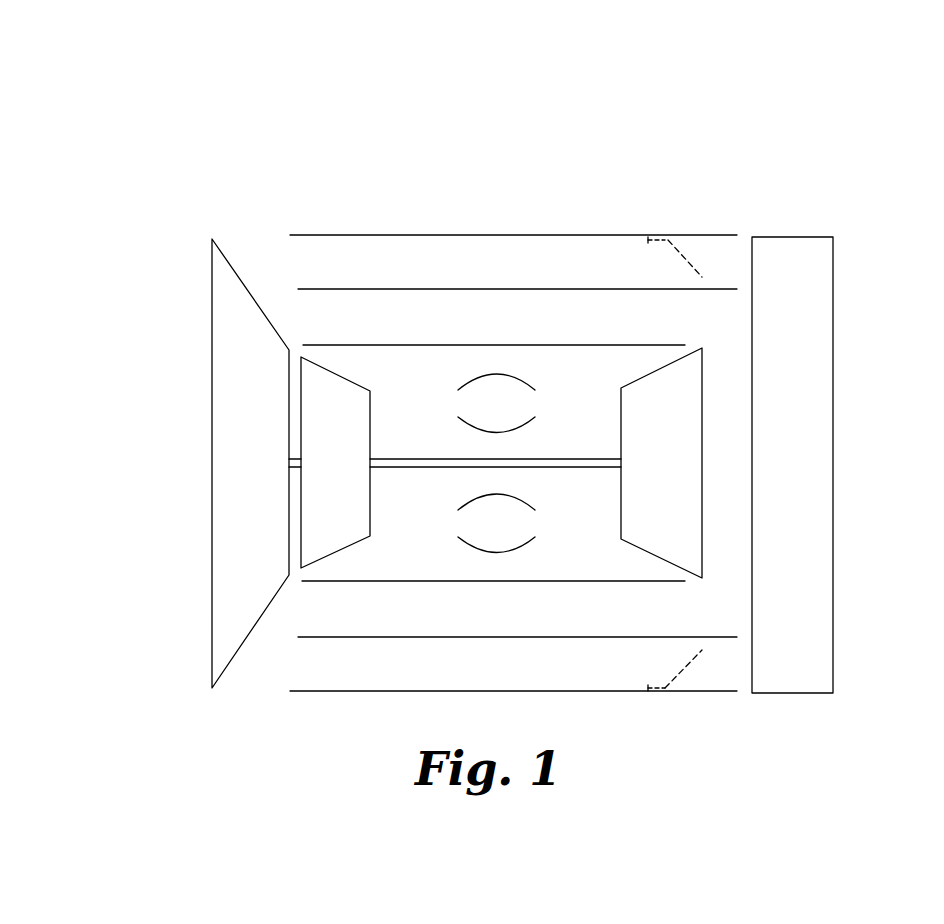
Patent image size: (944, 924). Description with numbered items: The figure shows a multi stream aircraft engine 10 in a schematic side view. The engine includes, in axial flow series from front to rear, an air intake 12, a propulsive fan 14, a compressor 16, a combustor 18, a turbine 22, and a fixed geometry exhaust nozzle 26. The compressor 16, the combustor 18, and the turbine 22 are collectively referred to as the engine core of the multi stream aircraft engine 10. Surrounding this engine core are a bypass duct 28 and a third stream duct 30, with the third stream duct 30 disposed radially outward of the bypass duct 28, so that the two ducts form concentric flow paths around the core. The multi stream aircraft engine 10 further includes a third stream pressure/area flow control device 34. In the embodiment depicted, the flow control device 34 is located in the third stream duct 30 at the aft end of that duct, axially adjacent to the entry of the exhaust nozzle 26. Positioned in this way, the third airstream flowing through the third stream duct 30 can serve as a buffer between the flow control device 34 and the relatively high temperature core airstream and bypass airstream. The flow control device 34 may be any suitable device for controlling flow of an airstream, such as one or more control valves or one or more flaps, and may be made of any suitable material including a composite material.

The multi stream aircraft engine 10 is at (615, 110).
The air intake 12 is at (145, 392).
The propulsive fan 14 is at (210, 297).
The compressor 16 is at (340, 365).
The combustor 18 is at (443, 398).
The turbine 22 is at (644, 368).
The fixed geometry exhaust nozzle 26 is at (808, 233).
The bypass duct 28 is at (492, 320).
The third stream duct 30 is at (560, 265).
The third stream pressure/area flow control device 34 is at (692, 250).